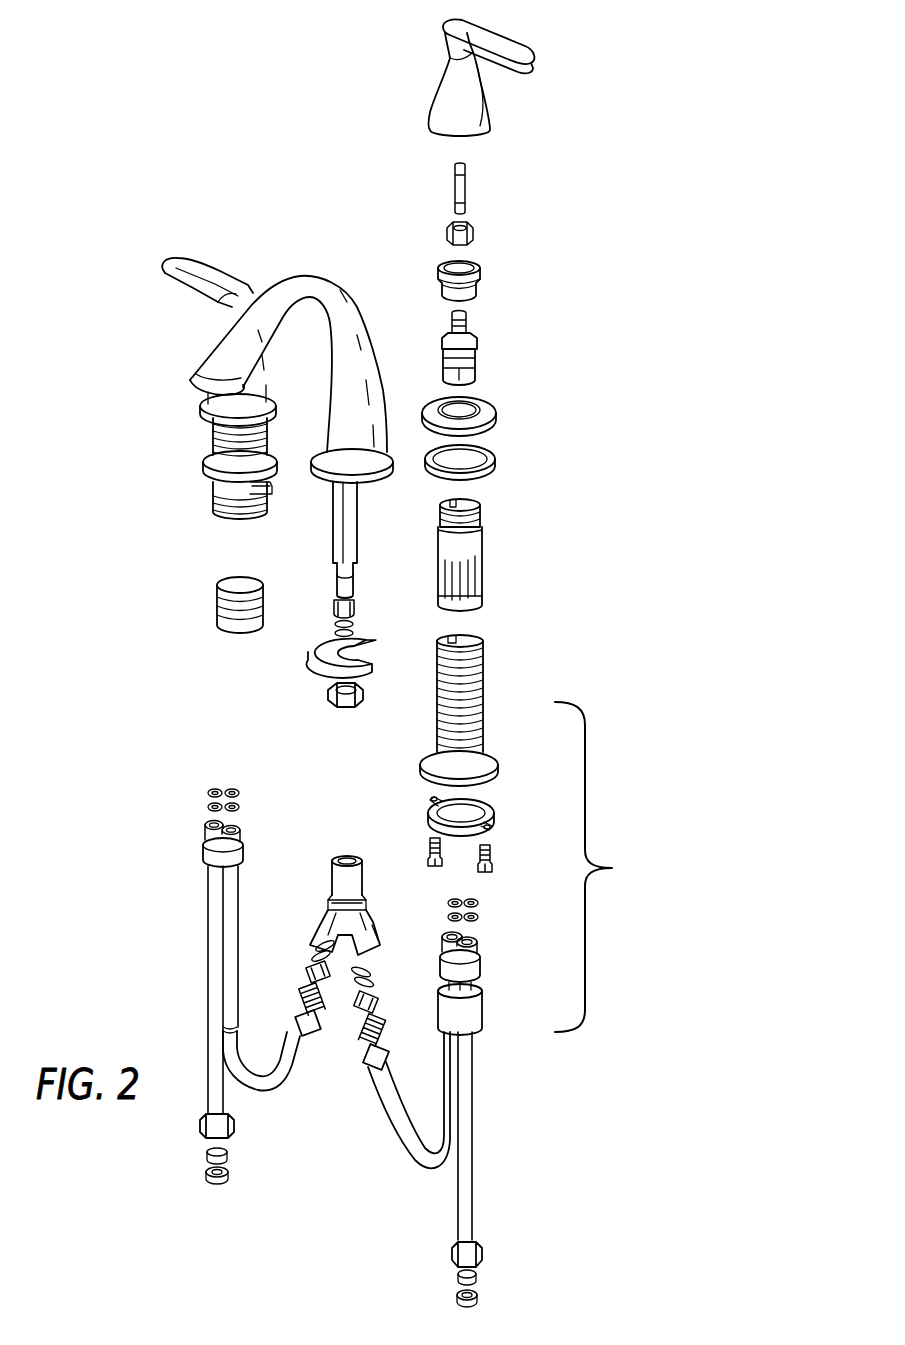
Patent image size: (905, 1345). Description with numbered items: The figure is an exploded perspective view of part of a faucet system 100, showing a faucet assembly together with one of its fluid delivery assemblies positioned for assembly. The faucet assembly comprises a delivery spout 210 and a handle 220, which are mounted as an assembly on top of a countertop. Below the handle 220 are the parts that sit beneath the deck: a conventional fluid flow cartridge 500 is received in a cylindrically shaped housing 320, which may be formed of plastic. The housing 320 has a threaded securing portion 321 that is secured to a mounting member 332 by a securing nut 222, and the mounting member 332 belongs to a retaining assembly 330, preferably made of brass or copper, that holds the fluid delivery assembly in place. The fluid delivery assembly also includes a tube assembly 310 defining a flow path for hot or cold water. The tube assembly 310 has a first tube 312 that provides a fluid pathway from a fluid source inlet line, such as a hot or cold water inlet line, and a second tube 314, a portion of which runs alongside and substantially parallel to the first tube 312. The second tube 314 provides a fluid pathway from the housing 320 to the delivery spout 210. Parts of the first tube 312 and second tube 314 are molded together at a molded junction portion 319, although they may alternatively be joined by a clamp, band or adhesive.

The faucet system 100 is at (137, 193).
The delivery spout 210 is at (302, 282).
The handle 220 is at (489, 40).
The securing nut 222 is at (485, 279).
The fluid flow cartridge 500 is at (478, 342).
The threaded securing portion 321 is at (479, 509).
The housing 320 is at (469, 543).
The mounting member 332 is at (483, 675).
The retaining assembly 330 is at (604, 867).
The molded junction portion 319 is at (437, 958).
The tube assembly 310 is at (492, 956).
The first tube 312 is at (468, 1180).
The second tube 314 is at (398, 1140).